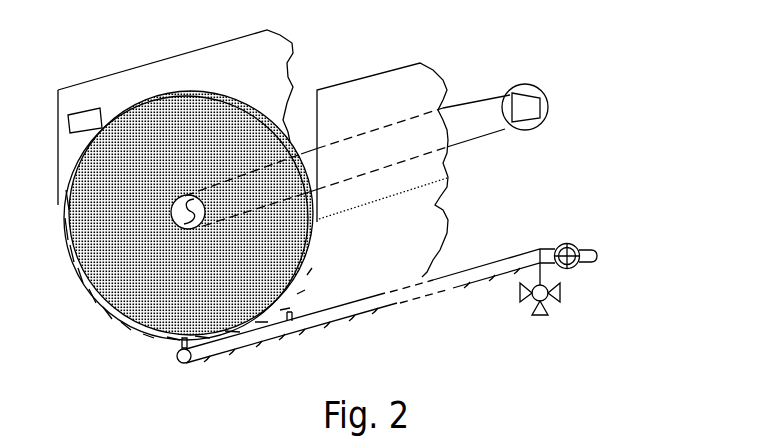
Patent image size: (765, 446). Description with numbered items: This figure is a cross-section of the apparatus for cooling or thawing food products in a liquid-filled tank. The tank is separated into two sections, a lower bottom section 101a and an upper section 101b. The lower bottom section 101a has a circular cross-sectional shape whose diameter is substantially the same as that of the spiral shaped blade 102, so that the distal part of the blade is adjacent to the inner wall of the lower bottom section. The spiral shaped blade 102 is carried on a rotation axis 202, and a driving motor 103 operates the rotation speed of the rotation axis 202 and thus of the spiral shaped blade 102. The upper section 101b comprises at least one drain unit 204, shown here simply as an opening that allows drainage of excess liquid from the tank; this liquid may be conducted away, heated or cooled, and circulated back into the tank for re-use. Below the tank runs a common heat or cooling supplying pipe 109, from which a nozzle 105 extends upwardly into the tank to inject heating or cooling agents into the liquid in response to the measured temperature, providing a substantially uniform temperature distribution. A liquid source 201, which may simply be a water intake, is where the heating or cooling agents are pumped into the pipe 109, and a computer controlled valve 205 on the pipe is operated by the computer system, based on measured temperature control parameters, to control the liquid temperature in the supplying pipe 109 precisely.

The lower bottom section 101a is at (447, 220).
The upper section 101b is at (430, 73).
The spiral shaped blade 102 is at (208, 122).
The driving motor 103 is at (552, 107).
The nozzle 105 is at (180, 345).
The heat or cooling supplying pipe 109 is at (227, 360).
The liquid source 201 is at (583, 250).
The rotation axis 202 is at (490, 95).
The drain unit 204 is at (100, 110).
The computer controlled valve 205 is at (562, 300).